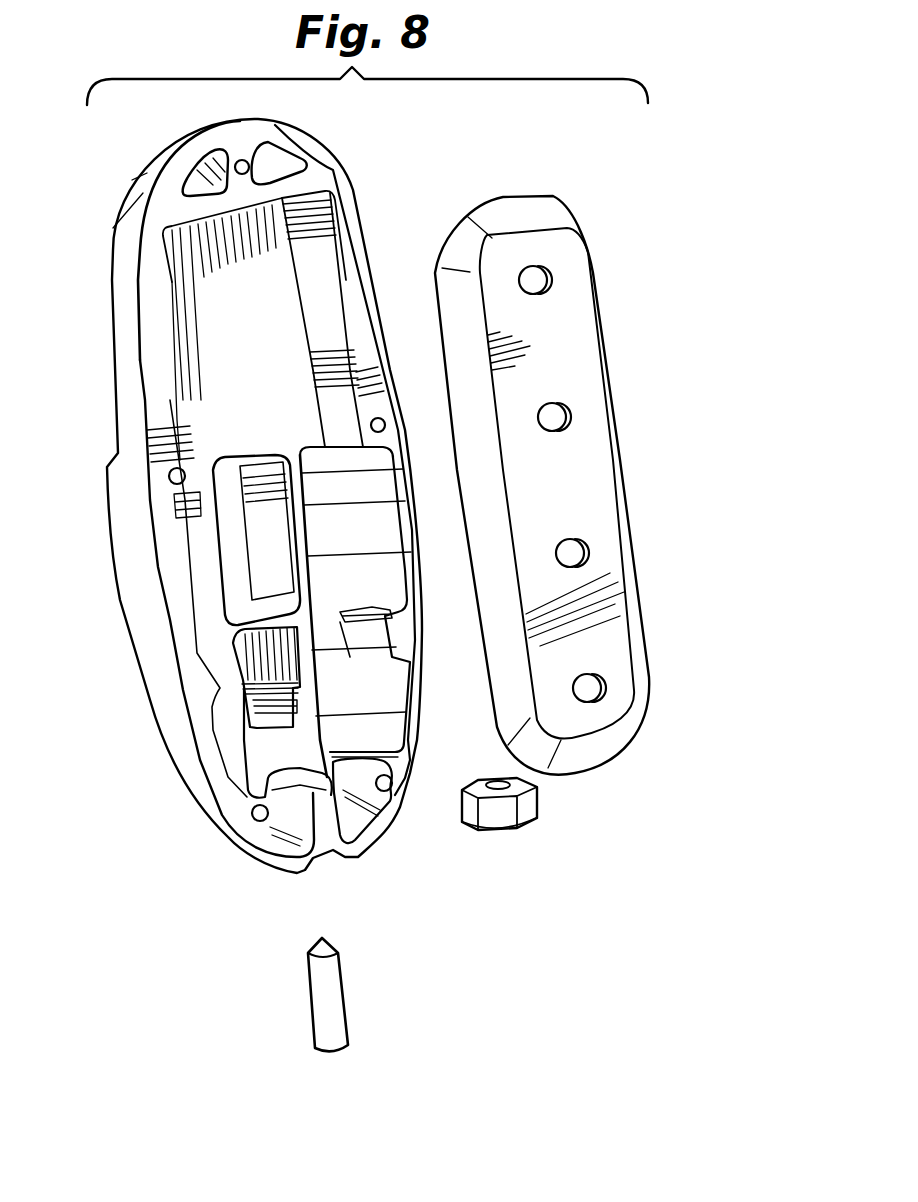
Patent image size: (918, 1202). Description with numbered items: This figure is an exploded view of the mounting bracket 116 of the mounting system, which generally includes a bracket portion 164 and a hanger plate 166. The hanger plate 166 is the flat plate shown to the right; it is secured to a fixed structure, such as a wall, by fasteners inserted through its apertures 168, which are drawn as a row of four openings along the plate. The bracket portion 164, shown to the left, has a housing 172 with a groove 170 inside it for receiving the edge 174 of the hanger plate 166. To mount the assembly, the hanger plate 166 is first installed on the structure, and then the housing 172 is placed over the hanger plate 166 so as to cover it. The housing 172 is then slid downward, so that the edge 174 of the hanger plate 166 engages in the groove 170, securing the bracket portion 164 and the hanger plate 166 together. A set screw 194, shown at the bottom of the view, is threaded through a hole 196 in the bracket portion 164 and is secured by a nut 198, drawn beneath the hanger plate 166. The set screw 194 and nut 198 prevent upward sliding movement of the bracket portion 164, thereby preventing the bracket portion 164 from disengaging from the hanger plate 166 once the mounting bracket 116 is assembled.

The mounting bracket 116 is at (683, 291).
The bracket portion 164 is at (177, 777).
The hanger plate 166 is at (592, 275).
The apertures 168 is at (588, 537).
The groove 170 is at (240, 268).
The housing 172 is at (278, 387).
The edge 174 is at (497, 203).
The set screw 194 is at (343, 975).
The hole 196 is at (262, 802).
The nut 198 is at (537, 800).